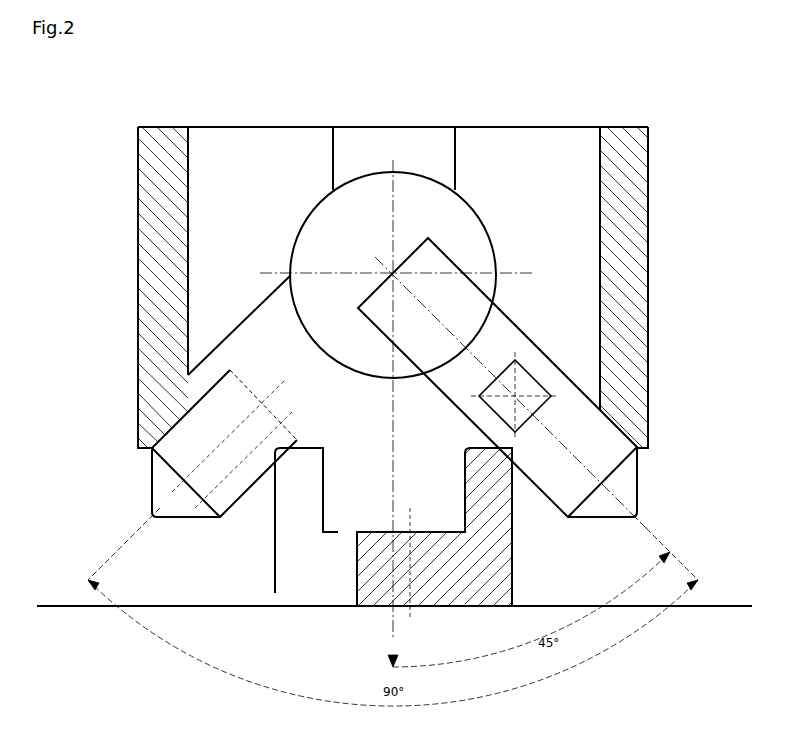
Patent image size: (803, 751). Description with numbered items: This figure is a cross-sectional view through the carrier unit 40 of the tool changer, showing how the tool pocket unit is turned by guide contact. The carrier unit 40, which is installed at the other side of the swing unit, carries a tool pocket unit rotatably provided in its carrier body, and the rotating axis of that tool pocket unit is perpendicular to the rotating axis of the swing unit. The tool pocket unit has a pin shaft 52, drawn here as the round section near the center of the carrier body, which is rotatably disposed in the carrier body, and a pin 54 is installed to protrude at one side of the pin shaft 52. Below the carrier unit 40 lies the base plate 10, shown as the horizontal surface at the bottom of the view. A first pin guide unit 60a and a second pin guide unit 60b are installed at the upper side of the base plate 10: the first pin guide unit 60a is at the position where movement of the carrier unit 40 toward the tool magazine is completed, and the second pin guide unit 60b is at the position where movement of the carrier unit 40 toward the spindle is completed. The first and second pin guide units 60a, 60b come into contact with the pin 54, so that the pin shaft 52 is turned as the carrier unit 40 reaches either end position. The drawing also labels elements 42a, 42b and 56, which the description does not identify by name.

The base plate 10 is at (183, 604).
The carrier unit 40 is at (540, 148).
The right housing wall 42a is at (640, 232).
The left housing wall 42b is at (140, 244).
The pin shaft 52 is at (413, 190).
The pin 54 is at (150, 476).
The pivot arm 56 is at (640, 456).
The first pin guide unit 60a is at (505, 549).
The second pin guide unit 60b is at (275, 537).